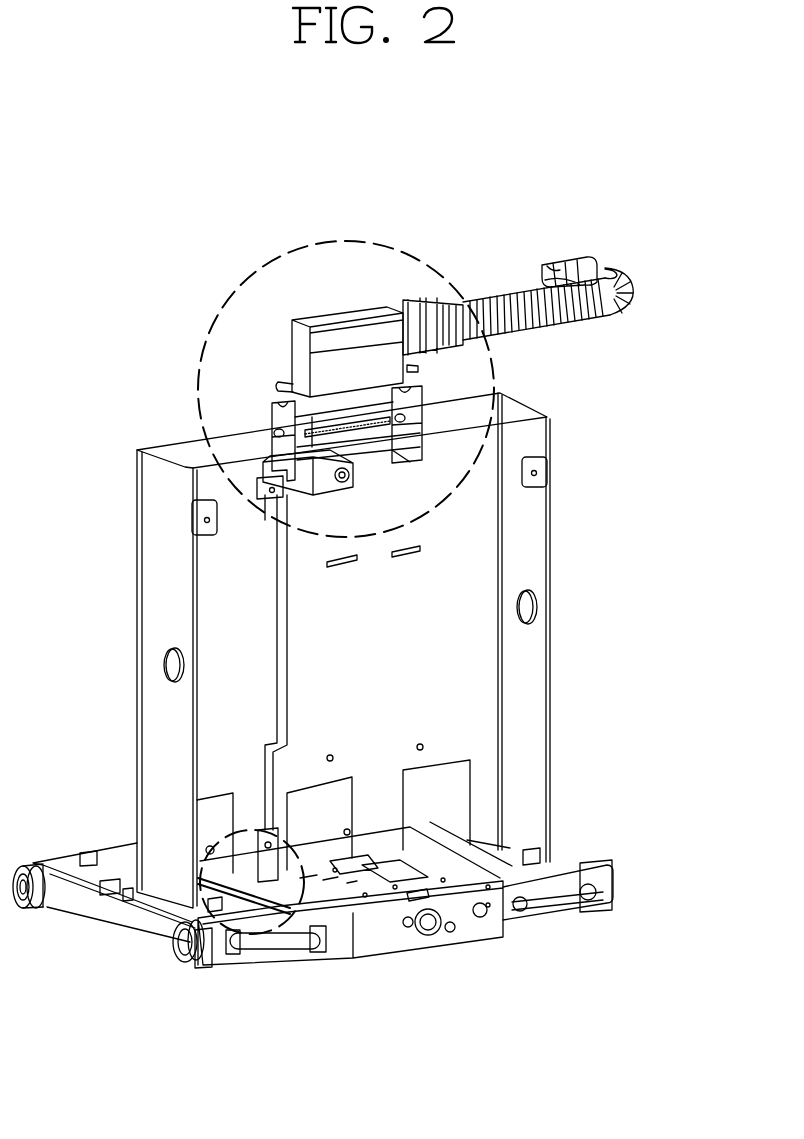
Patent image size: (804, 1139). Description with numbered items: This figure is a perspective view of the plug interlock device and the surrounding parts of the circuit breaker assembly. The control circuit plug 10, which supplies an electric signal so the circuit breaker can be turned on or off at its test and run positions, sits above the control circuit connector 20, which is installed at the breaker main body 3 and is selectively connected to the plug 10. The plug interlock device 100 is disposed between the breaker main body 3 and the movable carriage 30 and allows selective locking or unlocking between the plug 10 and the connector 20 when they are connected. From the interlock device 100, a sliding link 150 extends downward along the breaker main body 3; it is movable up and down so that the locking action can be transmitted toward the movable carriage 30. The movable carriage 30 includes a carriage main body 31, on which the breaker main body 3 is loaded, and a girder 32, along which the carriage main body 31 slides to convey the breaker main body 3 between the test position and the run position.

The breaker main body 3 is at (165, 710).
The control circuit plug 10 is at (292, 343).
The control circuit connector 20 is at (410, 440).
The movable carriage 30 is at (313, 965).
The carriage main body 31 is at (157, 940).
The girder 32 is at (404, 944).
The plug interlock device 100 is at (256, 471).
The sliding link 150 is at (282, 603).